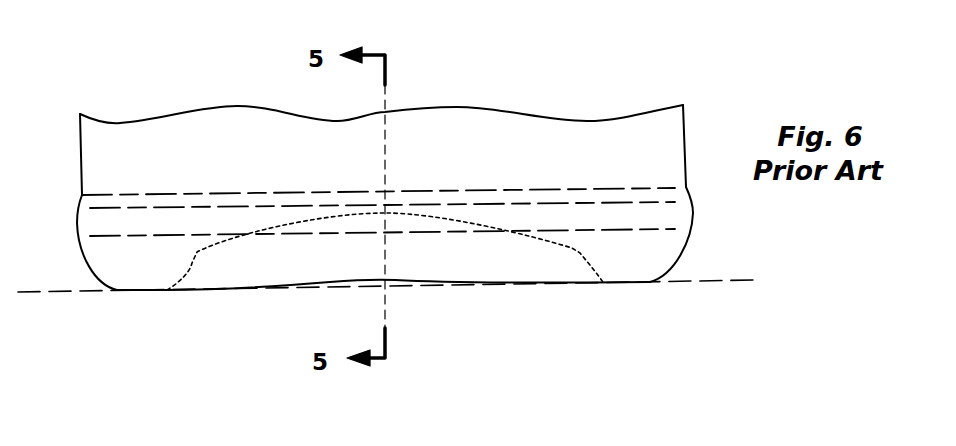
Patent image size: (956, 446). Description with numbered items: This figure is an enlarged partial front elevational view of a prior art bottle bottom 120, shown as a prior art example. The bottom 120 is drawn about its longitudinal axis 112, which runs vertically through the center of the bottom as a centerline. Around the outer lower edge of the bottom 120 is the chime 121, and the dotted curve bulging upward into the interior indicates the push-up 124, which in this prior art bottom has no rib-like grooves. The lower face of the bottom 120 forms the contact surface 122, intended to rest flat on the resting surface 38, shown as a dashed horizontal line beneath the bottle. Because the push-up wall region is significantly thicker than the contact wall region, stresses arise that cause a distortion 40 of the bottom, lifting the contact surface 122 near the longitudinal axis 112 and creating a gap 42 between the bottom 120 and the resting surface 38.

The longitudinal axis 112 is at (388, 160).
The prior art bottom 120 is at (642, 250).
The chime 121 is at (678, 265).
The contact surface 122 is at (235, 290).
The push-up 124 is at (483, 223).
The distortion 40 is at (418, 282).
The gap 42 is at (395, 282).
The resting surface 38 is at (715, 283).